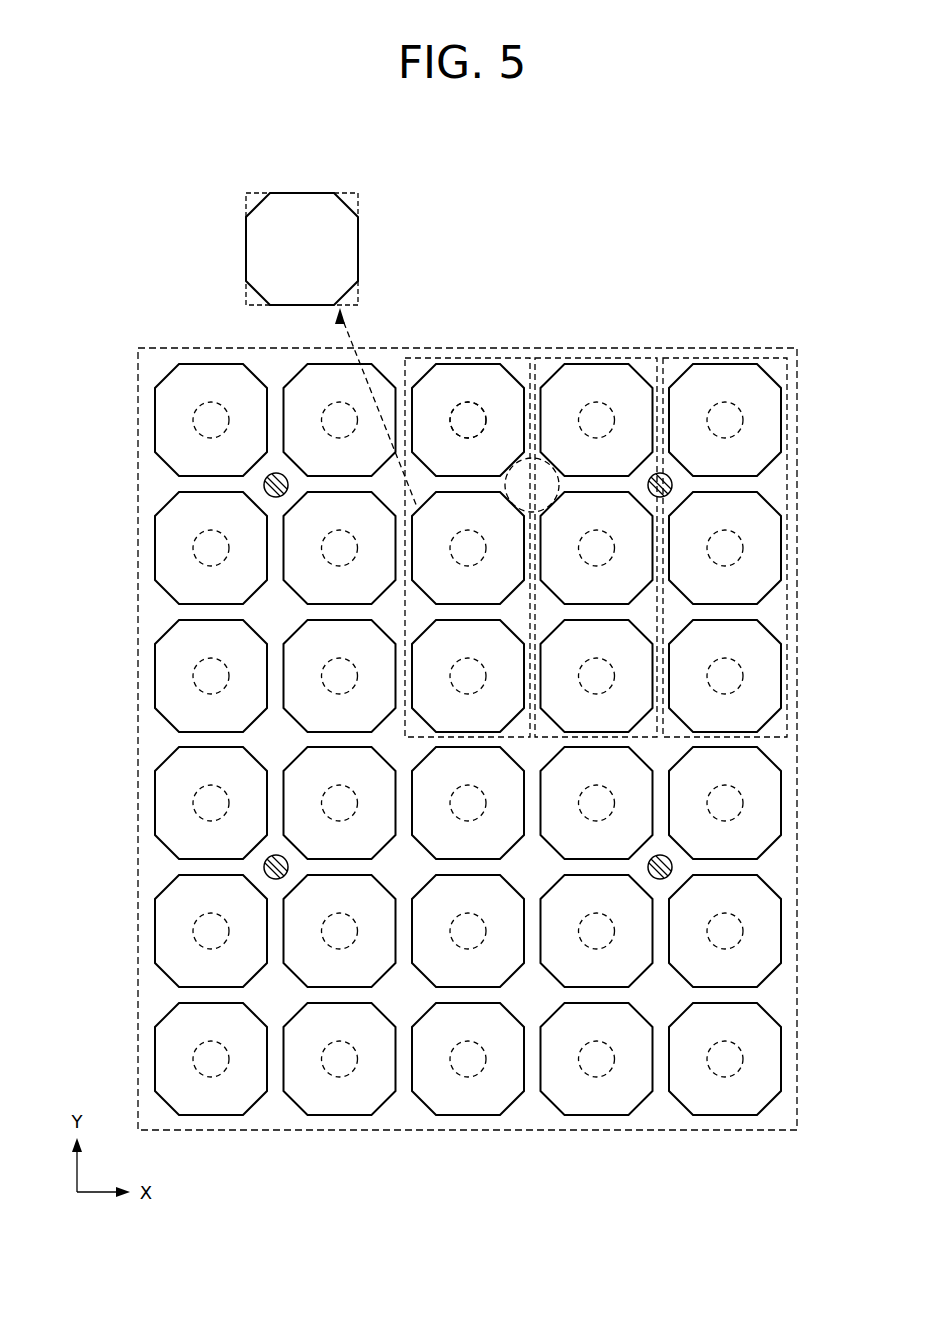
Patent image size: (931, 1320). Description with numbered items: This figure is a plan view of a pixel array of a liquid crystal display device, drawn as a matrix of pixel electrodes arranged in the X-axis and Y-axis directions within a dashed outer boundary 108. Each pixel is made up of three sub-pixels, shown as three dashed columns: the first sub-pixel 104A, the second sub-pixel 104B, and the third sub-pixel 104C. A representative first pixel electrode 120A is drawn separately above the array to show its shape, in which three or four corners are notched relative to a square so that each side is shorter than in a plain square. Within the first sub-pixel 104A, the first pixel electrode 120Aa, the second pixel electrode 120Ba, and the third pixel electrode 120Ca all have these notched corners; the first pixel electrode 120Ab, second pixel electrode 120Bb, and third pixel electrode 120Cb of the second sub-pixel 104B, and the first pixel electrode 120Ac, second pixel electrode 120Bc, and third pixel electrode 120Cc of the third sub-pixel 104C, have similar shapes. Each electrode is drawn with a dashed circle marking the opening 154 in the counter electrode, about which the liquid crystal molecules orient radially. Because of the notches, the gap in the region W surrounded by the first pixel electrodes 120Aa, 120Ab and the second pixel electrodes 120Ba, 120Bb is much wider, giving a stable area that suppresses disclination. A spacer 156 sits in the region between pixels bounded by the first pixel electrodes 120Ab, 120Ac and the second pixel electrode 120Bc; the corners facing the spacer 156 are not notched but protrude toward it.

The pixel array region 108 is at (184, 346).
The first pixel electrode 120A is at (359, 250).
The first sub-pixel 104A is at (520, 356).
The second sub-pixel 104B is at (646, 356).
The third sub-pixel 104C is at (775, 356).
The opening 154 is at (468, 400).
The spacer 156 is at (666, 494).
The region W is at (546, 462).
The second pixel electrode 120Ba is at (434, 461).
The second pixel electrode 120Bb is at (562, 461).
The second pixel electrode 120Bc is at (691, 461).
The first pixel electrode 120Aa is at (434, 589).
The first pixel electrode 120Ab is at (562, 589).
The first pixel electrode 120Ac is at (691, 589).
The third pixel electrode 120Ca is at (434, 717).
The third pixel electrode 120Cb is at (562, 717).
The third pixel electrode 120Cc is at (691, 717).